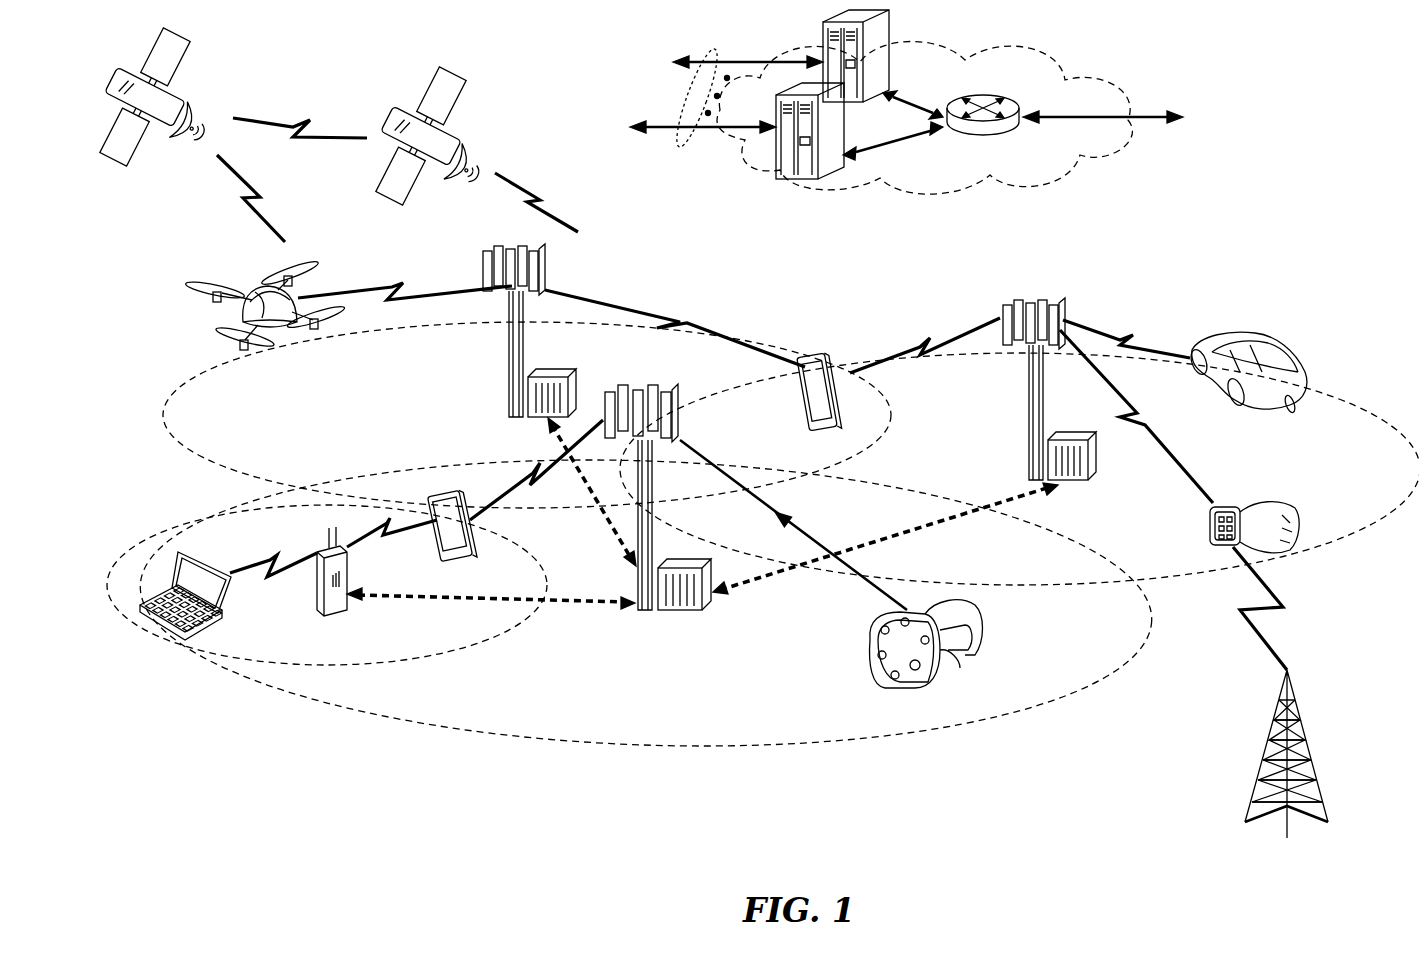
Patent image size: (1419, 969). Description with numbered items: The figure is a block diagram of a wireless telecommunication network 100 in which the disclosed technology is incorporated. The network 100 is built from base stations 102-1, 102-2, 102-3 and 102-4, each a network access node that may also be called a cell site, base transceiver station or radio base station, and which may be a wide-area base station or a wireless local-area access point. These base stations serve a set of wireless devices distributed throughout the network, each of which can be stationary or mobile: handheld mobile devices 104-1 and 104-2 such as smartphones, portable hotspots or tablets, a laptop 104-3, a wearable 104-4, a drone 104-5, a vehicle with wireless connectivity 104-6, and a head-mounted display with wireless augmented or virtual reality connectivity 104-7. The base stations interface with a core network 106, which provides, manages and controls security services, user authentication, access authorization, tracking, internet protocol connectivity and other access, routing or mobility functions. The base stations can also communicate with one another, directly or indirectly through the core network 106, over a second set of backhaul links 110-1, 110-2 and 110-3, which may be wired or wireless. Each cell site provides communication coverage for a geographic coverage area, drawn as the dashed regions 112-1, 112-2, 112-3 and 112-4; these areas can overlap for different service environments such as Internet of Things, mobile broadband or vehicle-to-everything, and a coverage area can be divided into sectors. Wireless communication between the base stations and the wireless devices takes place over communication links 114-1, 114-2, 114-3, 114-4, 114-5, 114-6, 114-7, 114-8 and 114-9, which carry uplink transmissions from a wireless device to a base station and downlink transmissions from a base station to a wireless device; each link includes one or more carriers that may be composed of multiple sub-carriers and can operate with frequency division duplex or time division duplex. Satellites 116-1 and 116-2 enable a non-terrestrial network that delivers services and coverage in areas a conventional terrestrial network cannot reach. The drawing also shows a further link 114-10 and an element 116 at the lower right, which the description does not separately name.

The wireless telecommunication network 100 is at (1317, 108).
The base station 102-1 is at (645, 615).
The base station 102-2 is at (506, 368).
The base station 102-3 is at (1027, 405).
The base station 102-4 is at (316, 600).
The handheld mobile device 104-1 is at (470, 545).
The handheld mobile device 104-2 is at (800, 400).
The laptop 104-3 is at (168, 640).
The wearable 104-4 is at (1232, 503).
The drone 104-5 is at (283, 335).
The vehicle with wireless connectivity 104-6 is at (1268, 348).
The head-mounted display with wireless AR/VR connectivity 104-7 is at (975, 635).
The core network 106 is at (1015, 187).
The backhaul link 110-1 is at (386, 598).
The backhaul link 110-2 is at (950, 520).
The backhaul link 110-3 is at (607, 522).
The coverage area 112-1 is at (572, 745).
The coverage area 112-2 is at (452, 652).
The coverage area 112-3 is at (226, 470).
The coverage area 112-4 is at (1335, 398).
The communication link 114-1 is at (802, 520).
The communication link 114-2 is at (527, 472).
The communication link 114-3 is at (268, 575).
The communication link 114-4 is at (395, 543).
The communication link 114-5 is at (392, 283).
The communication link 114-6 is at (922, 340).
The communication link 114-7 is at (682, 318).
The communication link 114-8 is at (1163, 440).
The communication link 114-9 is at (1125, 333).
The communication link 114-10 is at (1270, 610).
The radio tower / broadcast station 116 is at (1305, 745).
The satellite 116-1 is at (198, 108).
The satellite 116-2 is at (476, 148).